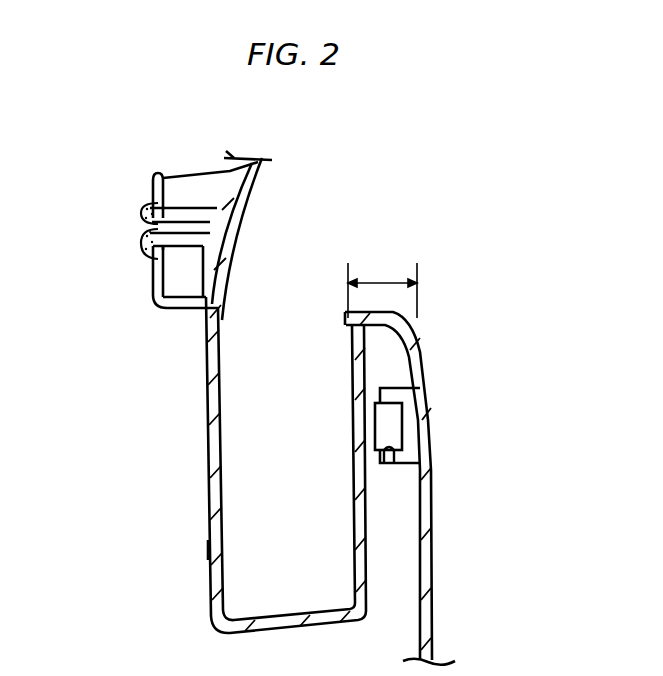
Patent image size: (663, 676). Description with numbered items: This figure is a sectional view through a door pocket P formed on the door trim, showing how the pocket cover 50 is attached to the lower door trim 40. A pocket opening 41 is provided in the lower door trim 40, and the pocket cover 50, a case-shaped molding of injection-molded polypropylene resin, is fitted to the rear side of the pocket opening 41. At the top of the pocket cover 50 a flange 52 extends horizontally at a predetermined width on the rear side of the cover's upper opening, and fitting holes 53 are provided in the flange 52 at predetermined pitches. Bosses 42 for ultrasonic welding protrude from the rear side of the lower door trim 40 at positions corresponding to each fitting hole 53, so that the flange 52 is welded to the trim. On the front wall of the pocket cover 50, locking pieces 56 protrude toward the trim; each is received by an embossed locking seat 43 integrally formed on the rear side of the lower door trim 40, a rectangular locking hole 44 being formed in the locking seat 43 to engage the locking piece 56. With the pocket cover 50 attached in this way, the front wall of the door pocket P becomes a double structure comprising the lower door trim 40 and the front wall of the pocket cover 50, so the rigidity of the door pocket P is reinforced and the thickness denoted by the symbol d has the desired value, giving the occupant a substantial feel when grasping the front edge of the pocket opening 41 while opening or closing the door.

The lower door trim 40 is at (430, 532).
The pocket opening 41 is at (287, 305).
The boss 42 is at (180, 216).
The locking seat 43 is at (380, 393).
The locking hole 44 is at (393, 467).
The pocket cover 50 is at (212, 548).
The flange 52 is at (153, 195).
The fitting hole 53 is at (150, 270).
The locking piece 56 is at (372, 430).
The door pocket P is at (435, 296).
The dimension d is at (382, 285).